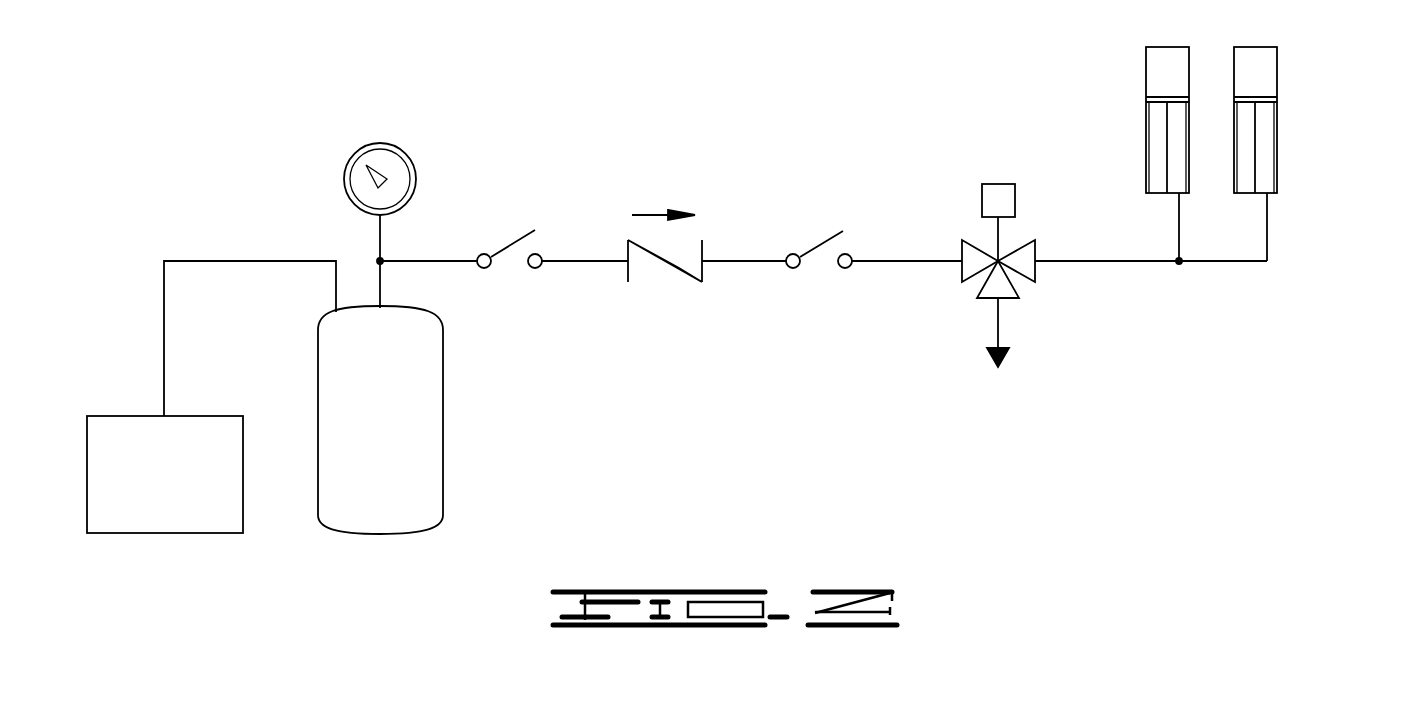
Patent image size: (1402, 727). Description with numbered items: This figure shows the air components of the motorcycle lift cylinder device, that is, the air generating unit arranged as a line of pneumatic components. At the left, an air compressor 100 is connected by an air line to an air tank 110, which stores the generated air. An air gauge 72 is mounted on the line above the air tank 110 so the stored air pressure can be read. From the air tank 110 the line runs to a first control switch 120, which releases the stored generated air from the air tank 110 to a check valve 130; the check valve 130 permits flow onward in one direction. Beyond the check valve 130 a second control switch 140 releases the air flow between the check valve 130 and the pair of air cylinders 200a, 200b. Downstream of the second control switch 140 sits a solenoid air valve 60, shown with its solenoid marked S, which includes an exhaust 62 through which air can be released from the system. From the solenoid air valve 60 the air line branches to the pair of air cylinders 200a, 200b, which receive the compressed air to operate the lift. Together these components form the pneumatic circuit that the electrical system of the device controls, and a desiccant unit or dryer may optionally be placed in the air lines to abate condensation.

The solenoid air valve 60 is at (990, 184).
The exhaust 62 is at (1000, 327).
The air gauge 72 is at (367, 147).
The air compressor 100 is at (127, 415).
The air storage tank 110 is at (443, 479).
The first control switch 120 is at (527, 232).
The check valve 130 is at (680, 270).
The second control switch 140 is at (832, 232).
The air cylinder 200a is at (1146, 85).
The air cylinder 200b is at (1277, 62).